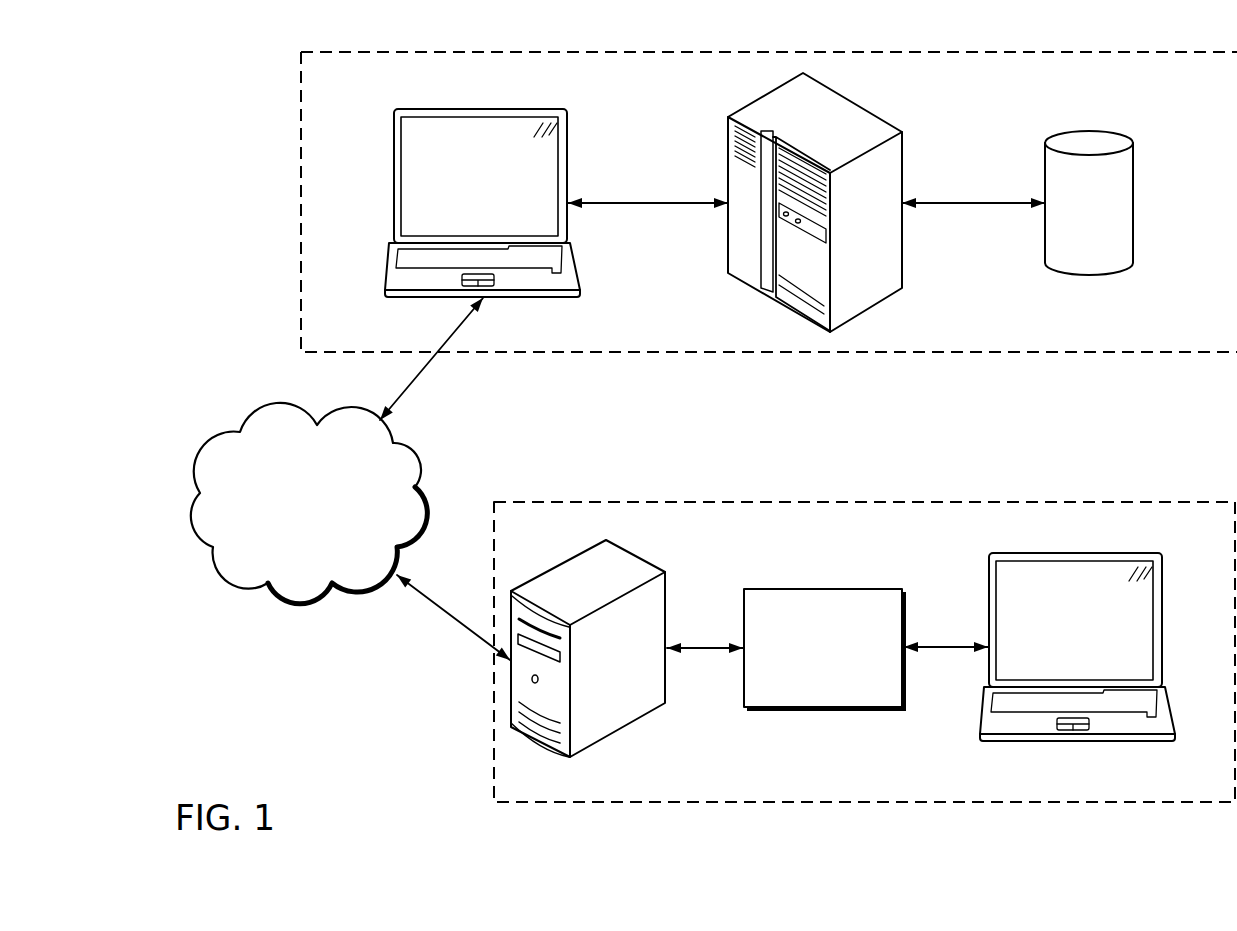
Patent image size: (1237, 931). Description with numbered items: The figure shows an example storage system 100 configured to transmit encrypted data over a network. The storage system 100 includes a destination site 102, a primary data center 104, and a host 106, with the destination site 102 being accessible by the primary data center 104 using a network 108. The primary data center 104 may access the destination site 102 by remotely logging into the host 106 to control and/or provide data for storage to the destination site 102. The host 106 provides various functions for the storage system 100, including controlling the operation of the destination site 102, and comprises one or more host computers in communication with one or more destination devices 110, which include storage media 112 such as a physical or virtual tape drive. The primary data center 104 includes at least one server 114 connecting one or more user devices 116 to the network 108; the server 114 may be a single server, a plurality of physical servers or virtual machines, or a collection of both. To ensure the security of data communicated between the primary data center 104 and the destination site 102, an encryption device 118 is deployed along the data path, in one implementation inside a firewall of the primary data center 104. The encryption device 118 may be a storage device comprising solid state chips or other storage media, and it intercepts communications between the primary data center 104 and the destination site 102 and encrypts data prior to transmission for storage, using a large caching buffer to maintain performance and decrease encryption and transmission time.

The storage system 100 is at (238, 144).
The destination site 102 is at (1100, 331).
The primary data center 104 is at (850, 783).
The host 106 is at (394, 172).
The network 108 is at (291, 526).
The destination device 110 is at (736, 281).
The storage media 112 is at (1133, 186).
The server 114 is at (623, 727).
The user device 116 is at (1170, 712).
The encryption device 118 is at (807, 679).